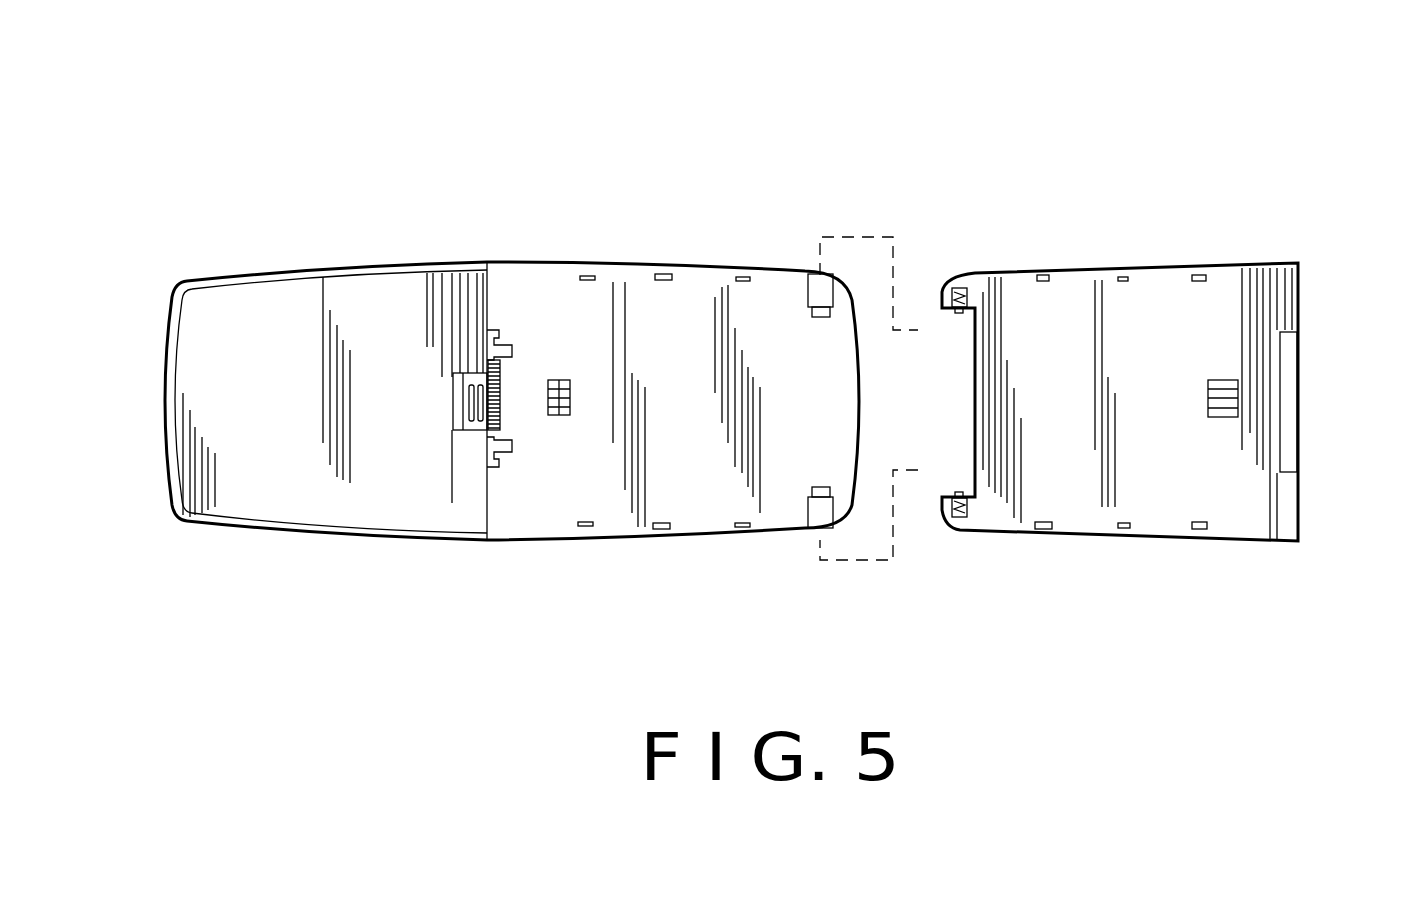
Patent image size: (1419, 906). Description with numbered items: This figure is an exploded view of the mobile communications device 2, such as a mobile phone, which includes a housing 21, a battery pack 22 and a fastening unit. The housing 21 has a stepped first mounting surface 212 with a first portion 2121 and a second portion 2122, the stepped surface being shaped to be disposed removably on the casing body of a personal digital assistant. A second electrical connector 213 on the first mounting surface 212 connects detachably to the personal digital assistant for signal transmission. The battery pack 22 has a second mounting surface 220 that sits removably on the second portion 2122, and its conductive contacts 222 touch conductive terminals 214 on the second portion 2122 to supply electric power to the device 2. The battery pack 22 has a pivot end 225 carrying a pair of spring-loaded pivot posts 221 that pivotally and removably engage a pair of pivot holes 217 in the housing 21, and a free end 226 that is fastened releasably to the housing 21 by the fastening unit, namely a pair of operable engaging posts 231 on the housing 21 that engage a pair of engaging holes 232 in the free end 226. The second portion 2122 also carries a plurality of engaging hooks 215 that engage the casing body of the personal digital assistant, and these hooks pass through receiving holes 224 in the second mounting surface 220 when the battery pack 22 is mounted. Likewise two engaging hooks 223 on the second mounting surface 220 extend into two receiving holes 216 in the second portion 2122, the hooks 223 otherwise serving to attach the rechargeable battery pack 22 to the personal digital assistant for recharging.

The mobile communications device 2 is at (387, 177).
The housing 21 is at (172, 290).
The first mounting surface 212 is at (362, 285).
The first portion 2121 is at (287, 332).
The second portion 2122 is at (622, 330).
The operable engaging posts 231 is at (487, 443).
The second electrical connector 213 is at (502, 460).
The conductive terminals 214 is at (570, 415).
The engaging hooks 215 is at (585, 276).
The receiving holes 216 is at (663, 274).
The pivot holes 217 is at (812, 487).
The battery pack 22 is at (1158, 268).
The second mounting surface 220 is at (1080, 277).
The spring-loaded pivot posts 221 is at (960, 313).
The conductive contacts 222 is at (1232, 417).
The engaging hooks 223 is at (1122, 277).
The receiving holes 224 is at (1040, 275).
The pivot end 225 is at (948, 290).
The free end 226 is at (1298, 315).
The engaging holes 232 is at (1297, 360).